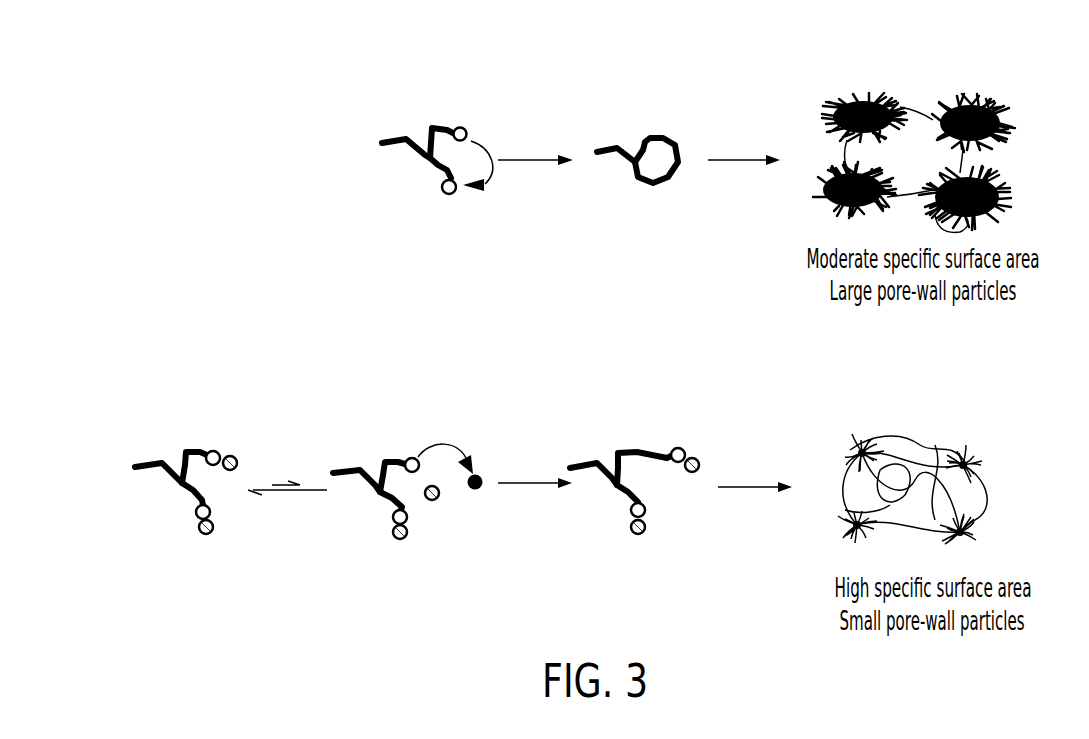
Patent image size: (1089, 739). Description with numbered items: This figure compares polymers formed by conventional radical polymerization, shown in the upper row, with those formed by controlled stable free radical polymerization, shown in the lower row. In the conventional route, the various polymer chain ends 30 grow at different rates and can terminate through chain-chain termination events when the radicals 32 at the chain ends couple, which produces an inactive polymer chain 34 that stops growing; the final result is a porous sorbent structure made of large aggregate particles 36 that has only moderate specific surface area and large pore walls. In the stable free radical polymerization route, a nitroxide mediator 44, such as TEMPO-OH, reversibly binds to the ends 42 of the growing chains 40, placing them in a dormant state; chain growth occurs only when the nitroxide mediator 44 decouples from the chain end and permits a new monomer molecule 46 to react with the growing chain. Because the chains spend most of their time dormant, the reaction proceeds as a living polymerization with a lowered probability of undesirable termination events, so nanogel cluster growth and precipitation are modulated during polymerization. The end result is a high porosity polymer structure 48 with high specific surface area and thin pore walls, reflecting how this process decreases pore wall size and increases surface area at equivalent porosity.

The polymer chain ends 30 is at (432, 128).
The radicals 32 is at (466, 131).
The inactive polymer chain 34 is at (664, 137).
The large aggregate particles 36 is at (870, 96).
The growing chains 40 is at (185, 450).
The ends of growing chains 42 is at (217, 452).
The nitroxide mediator 44 is at (198, 529).
The monomer molecule 46 is at (478, 490).
The high porosity polymer structure 48 is at (973, 447).